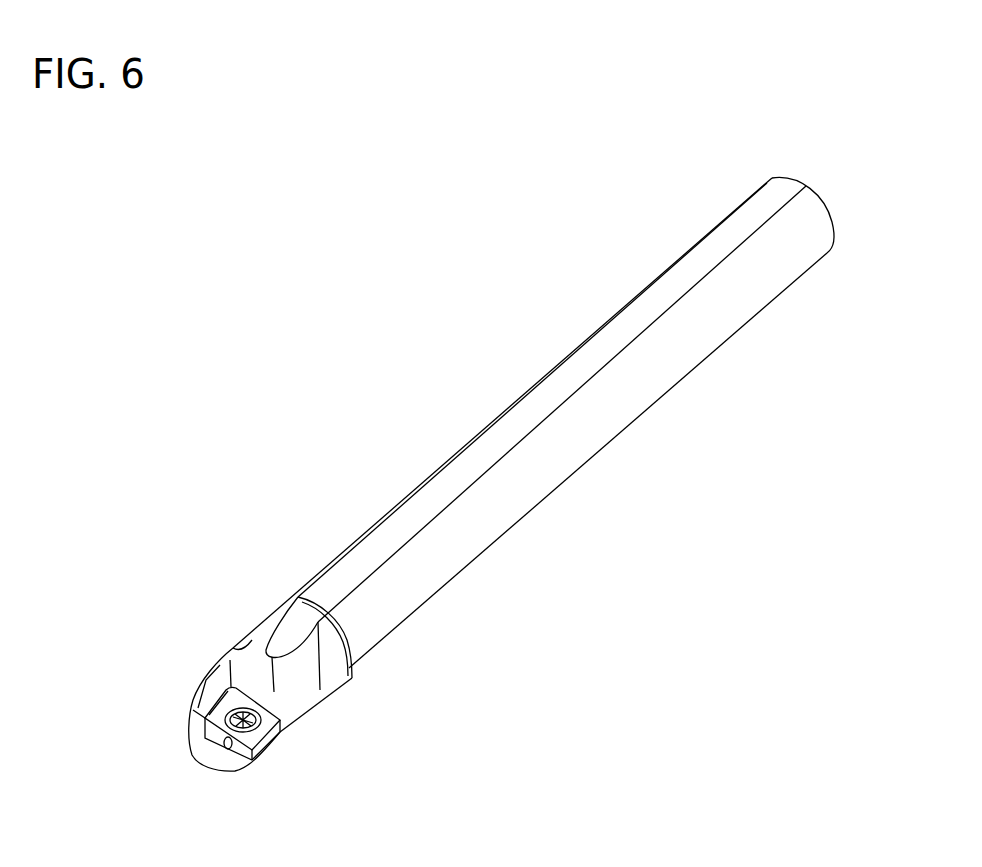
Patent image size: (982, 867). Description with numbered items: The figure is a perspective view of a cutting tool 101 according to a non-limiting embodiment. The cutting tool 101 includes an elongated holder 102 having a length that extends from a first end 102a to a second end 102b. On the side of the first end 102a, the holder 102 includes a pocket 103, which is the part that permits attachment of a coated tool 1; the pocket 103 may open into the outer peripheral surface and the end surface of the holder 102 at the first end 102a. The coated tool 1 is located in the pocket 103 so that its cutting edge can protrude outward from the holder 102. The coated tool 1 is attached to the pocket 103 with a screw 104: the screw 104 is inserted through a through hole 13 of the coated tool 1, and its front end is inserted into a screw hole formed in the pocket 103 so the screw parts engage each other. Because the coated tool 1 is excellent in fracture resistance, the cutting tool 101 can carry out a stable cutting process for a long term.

The cutting tool 101 is at (721, 164).
The holder 102 is at (523, 390).
The first end 102a is at (203, 752).
The second end 102b is at (808, 189).
The pocket 103 is at (228, 750).
The screw 104 is at (242, 716).
The coated tool 1 is at (270, 742).
The through hole 13 is at (223, 695).